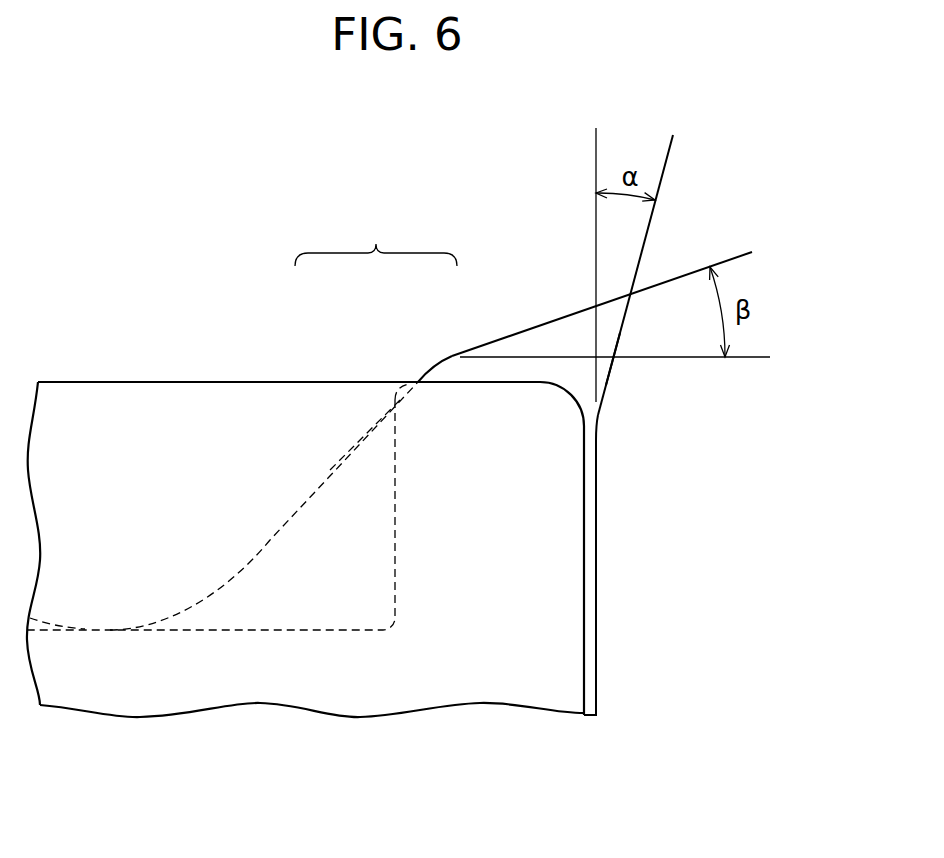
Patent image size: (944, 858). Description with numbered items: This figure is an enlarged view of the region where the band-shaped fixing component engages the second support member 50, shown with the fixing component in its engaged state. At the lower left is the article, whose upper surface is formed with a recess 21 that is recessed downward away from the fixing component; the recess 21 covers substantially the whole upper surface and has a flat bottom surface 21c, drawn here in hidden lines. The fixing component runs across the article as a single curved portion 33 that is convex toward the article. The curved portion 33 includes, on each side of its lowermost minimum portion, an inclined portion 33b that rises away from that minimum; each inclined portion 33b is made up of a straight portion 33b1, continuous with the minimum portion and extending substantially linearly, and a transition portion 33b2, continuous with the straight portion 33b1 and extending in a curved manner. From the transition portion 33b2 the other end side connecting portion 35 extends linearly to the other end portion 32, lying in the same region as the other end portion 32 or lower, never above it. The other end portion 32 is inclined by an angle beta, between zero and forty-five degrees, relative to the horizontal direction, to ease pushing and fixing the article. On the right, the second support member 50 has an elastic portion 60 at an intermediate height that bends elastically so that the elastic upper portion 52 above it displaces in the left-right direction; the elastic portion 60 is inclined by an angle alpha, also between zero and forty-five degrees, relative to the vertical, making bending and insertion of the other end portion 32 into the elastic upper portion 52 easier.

The recess 21 is at (117, 512).
The bottom surface 21c is at (278, 630).
The curved portion 33 is at (302, 500).
The inclined portion 33b is at (376, 240).
The straight portion 33b1 is at (343, 455).
The transition portion 33b2 is at (450, 357).
The other end side connecting portion 35 is at (542, 322).
The other end portion 32 is at (608, 300).
The elastic upper portion 52 is at (607, 381).
The elastic portion 60 is at (600, 416).
The second support member 50 is at (597, 593).